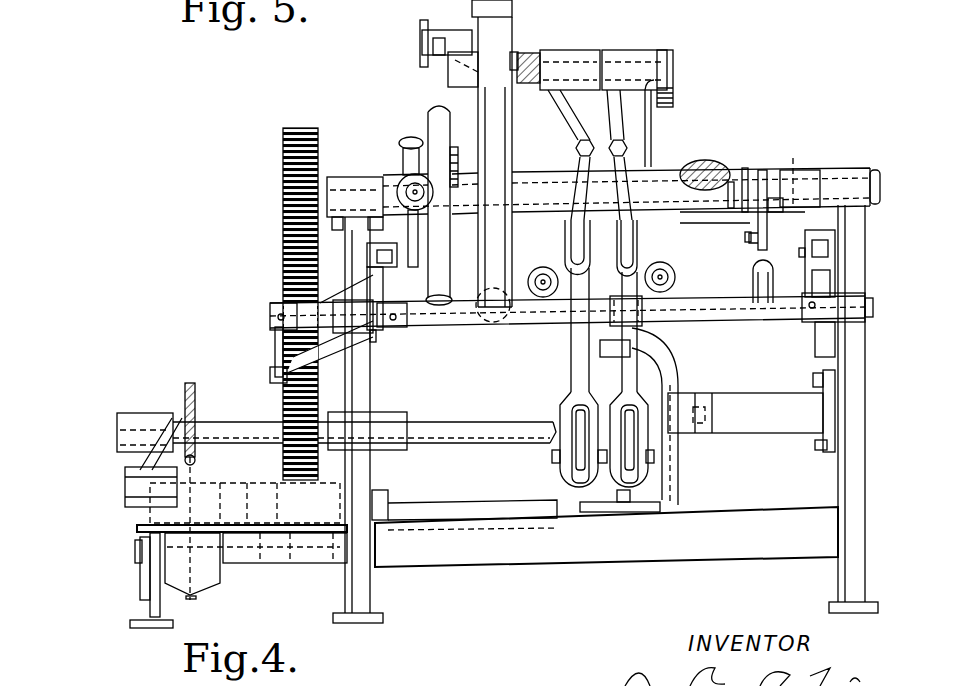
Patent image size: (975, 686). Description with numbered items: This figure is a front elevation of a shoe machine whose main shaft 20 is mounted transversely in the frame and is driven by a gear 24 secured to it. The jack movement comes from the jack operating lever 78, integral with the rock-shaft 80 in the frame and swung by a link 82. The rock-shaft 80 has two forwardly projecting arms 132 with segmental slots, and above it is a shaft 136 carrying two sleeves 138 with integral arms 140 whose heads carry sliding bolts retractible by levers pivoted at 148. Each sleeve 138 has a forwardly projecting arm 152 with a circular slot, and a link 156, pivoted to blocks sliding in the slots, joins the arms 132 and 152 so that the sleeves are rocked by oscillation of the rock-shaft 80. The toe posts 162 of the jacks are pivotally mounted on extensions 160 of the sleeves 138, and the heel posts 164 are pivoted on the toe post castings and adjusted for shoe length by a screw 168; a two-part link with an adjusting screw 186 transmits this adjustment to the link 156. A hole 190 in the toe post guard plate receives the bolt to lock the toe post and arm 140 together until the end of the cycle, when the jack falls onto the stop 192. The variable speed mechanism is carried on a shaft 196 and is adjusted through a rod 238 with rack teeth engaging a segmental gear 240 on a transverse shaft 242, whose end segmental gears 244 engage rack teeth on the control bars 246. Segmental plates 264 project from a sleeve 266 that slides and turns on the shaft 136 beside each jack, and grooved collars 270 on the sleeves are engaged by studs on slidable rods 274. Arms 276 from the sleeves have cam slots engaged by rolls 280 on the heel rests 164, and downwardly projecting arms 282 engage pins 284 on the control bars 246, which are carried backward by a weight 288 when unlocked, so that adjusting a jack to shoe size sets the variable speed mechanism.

The main shaft 20 is at (323, 297).
The gear 24 is at (293, 128).
The jack operating lever 78 is at (680, 482).
The rock-shaft 80 is at (602, 413).
The link 82 is at (653, 347).
The forwardly projecting arms 132 is at (573, 477).
The shaft 136 is at (322, 190).
The sleeves 138 is at (705, 164).
The arms 140 is at (652, 113).
The pivot 148 is at (580, 118).
The forwardly projecting arm 152 is at (640, 252).
The link 156 is at (630, 377).
The extensions 160 is at (742, 207).
The toe posts 162 is at (532, 57).
The heel posts 164 is at (495, 93).
The screw 168 is at (398, 182).
The screw 186 is at (543, 297).
The hole 190 is at (548, 92).
The stop 192 is at (753, 277).
The shaft 196 is at (252, 432).
The rod 238 is at (273, 377).
The segmental gear 240 is at (275, 353).
The transverse shaft 242 is at (268, 322).
The segmental gears 244 is at (373, 395).
The control bars 246 is at (387, 252).
The segmental plates 264 is at (793, 158).
The sleeve 266 is at (813, 170).
The grooved collars 270 is at (764, 170).
The slidable rods 274 is at (731, 190).
The arms 276 is at (709, 237).
The rolls 280 is at (747, 238).
The downwardly projecting arms 282 is at (410, 263).
The pins 284 is at (373, 342).
The weight 288 is at (208, 573).